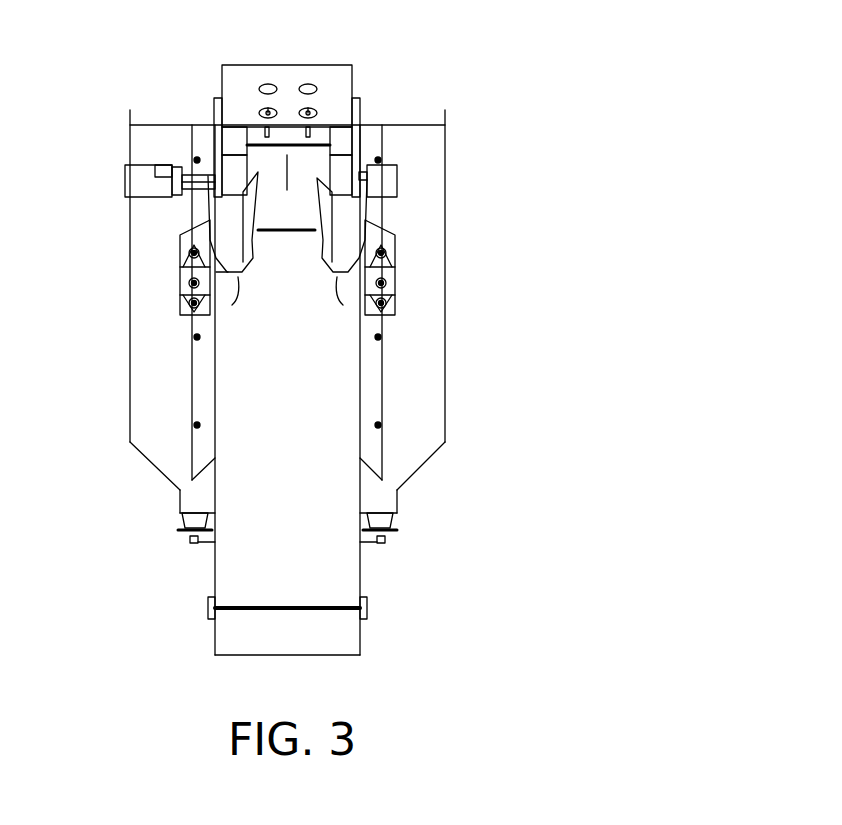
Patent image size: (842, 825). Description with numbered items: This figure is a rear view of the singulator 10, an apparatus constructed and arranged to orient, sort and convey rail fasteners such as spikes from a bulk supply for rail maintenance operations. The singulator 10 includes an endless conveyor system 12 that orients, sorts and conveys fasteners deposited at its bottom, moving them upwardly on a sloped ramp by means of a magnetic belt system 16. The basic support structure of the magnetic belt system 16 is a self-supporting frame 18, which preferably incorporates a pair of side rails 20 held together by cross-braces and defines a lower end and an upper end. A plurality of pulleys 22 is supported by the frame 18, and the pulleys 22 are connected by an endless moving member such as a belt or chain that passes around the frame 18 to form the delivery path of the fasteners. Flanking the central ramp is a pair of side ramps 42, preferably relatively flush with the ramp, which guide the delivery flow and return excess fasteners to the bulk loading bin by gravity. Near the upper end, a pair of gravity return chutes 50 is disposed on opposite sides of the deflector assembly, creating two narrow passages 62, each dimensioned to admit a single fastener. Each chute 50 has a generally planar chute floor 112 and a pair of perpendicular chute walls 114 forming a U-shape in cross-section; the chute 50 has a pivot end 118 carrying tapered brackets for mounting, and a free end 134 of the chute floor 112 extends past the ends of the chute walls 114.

The singulator 10 is at (468, 96).
The endless conveyor system 12 is at (137, 571).
The magnetic belt system 16 is at (385, 558).
The self-supporting frame 18 is at (215, 573).
The side rails 20 is at (215, 563).
The pulleys 22 is at (211, 610).
The side ramps 42 is at (150, 402).
The gravity return chute 50 is at (228, 213).
The narrow passages 62 is at (230, 150).
The chute floor 112 is at (236, 277).
The chute walls 114 is at (208, 218).
The pivot end 118 is at (343, 197).
The free end of the chute floor 134 is at (230, 274).